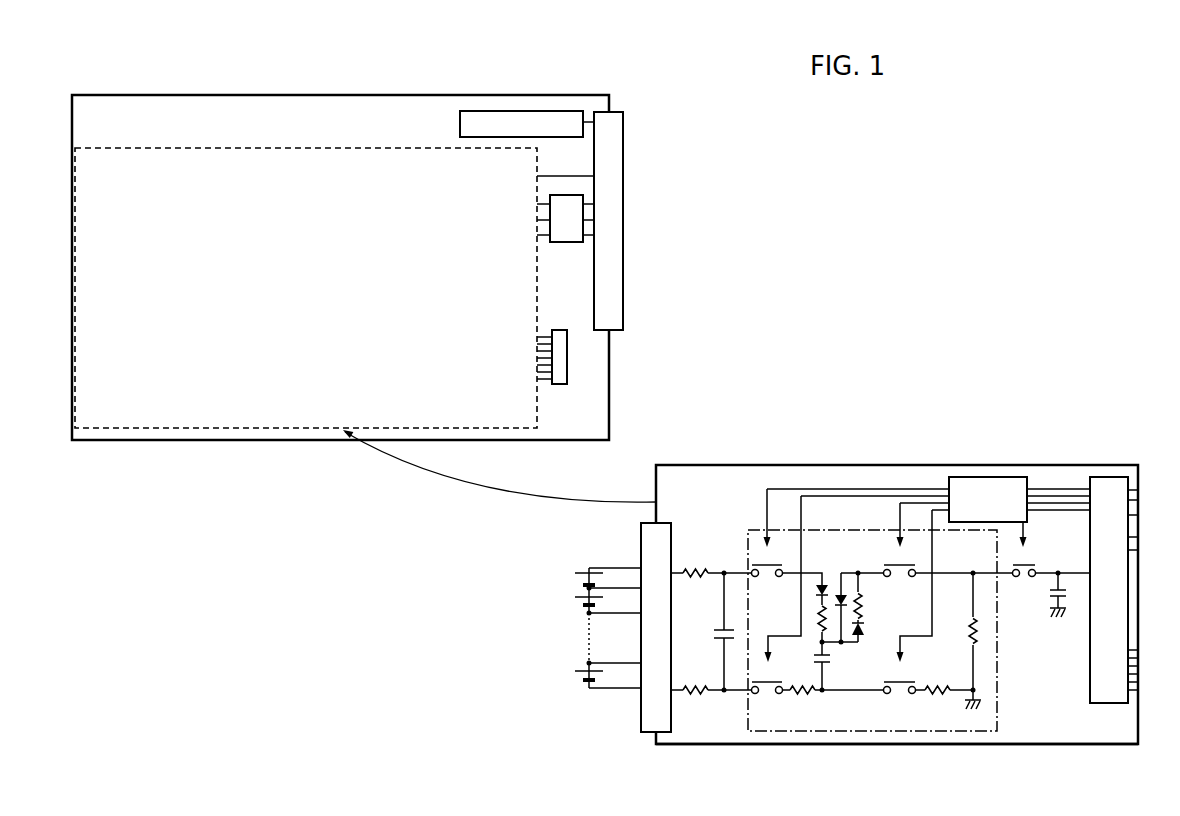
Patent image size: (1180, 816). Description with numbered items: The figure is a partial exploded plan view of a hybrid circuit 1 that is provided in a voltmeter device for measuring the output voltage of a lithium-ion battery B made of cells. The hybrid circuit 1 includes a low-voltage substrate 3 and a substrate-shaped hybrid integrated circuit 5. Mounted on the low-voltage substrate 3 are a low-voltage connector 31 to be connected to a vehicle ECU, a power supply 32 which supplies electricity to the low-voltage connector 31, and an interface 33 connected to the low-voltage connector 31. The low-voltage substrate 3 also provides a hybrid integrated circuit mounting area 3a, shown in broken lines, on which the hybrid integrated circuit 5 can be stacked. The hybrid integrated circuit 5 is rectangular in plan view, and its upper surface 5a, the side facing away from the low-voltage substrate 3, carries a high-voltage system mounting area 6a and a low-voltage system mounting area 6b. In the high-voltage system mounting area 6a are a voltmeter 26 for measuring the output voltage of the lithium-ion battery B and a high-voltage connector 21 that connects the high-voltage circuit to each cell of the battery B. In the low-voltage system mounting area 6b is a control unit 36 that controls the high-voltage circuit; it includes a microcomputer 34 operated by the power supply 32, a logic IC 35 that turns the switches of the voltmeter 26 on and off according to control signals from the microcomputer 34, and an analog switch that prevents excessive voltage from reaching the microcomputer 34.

The hybrid circuit 1 is at (590, 76).
The low-voltage substrate 3 is at (492, 94).
The hybrid integrated circuit mounting area 3a is at (252, 428).
The low-voltage connector 31 is at (623, 176).
The power supply 32 is at (555, 112).
The interface 33 is at (566, 243).
The hybrid integrated circuit 5 is at (1068, 458).
The upper surface 5a is at (1030, 710).
The high-voltage system mounting area 6a is at (788, 731).
The low-voltage system mounting area 6b is at (1103, 710).
The high-voltage connector 21 is at (640, 628).
The voltmeter 26 is at (872, 717).
The microcomputer 34 is at (1130, 622).
The logic IC 35 is at (992, 477).
The control unit 36 is at (1083, 479).
The lithium-ion battery B is at (594, 556).